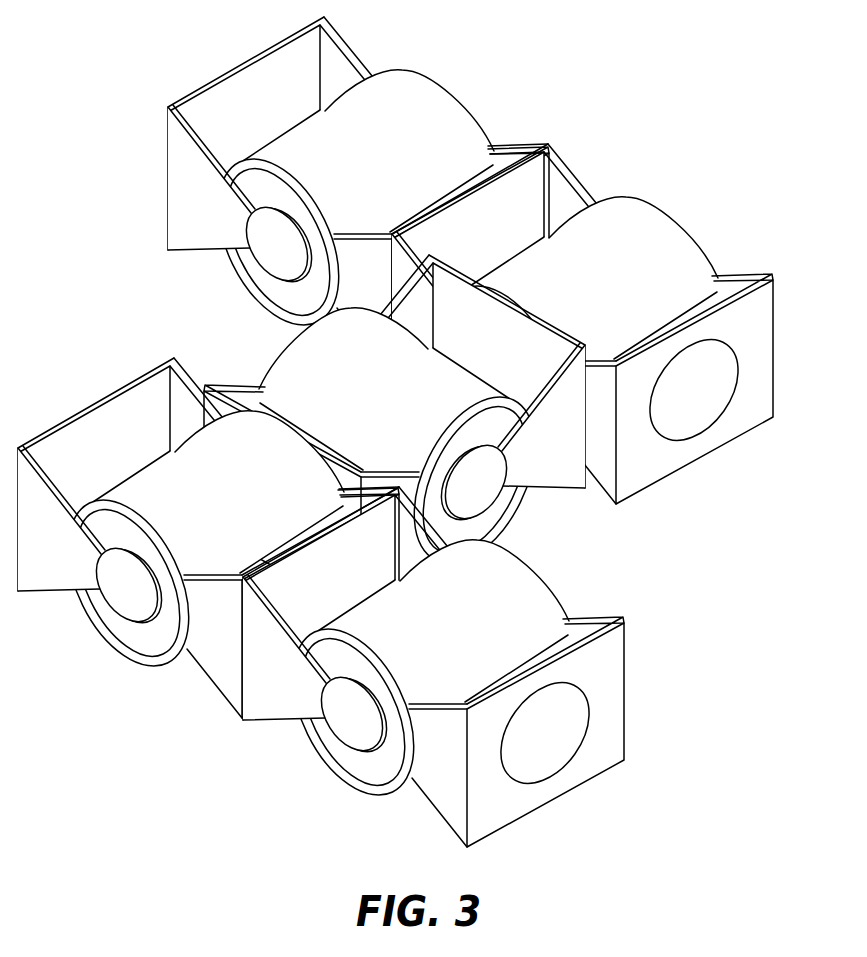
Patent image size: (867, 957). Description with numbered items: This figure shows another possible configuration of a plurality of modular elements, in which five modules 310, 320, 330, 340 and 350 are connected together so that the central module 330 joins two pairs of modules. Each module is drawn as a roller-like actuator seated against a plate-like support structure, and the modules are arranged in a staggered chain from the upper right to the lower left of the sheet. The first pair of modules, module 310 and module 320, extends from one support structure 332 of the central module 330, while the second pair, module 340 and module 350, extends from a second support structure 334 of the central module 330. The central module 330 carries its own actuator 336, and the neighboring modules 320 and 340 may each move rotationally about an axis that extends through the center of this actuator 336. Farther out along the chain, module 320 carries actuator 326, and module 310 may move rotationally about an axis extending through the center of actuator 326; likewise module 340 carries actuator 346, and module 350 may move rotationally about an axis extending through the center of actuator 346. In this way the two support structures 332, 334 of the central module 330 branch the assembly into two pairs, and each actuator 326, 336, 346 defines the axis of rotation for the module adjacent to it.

The module 310 is at (582, 581).
The module 320 is at (208, 525).
The actuator 326 is at (192, 473).
The central module 330 is at (373, 435).
The support structure 332 is at (217, 395).
The second support structure 334 is at (553, 463).
The actuator 336 is at (414, 383).
The module 340 is at (582, 322).
The actuator 346 is at (678, 256).
The module 350 is at (481, 63).